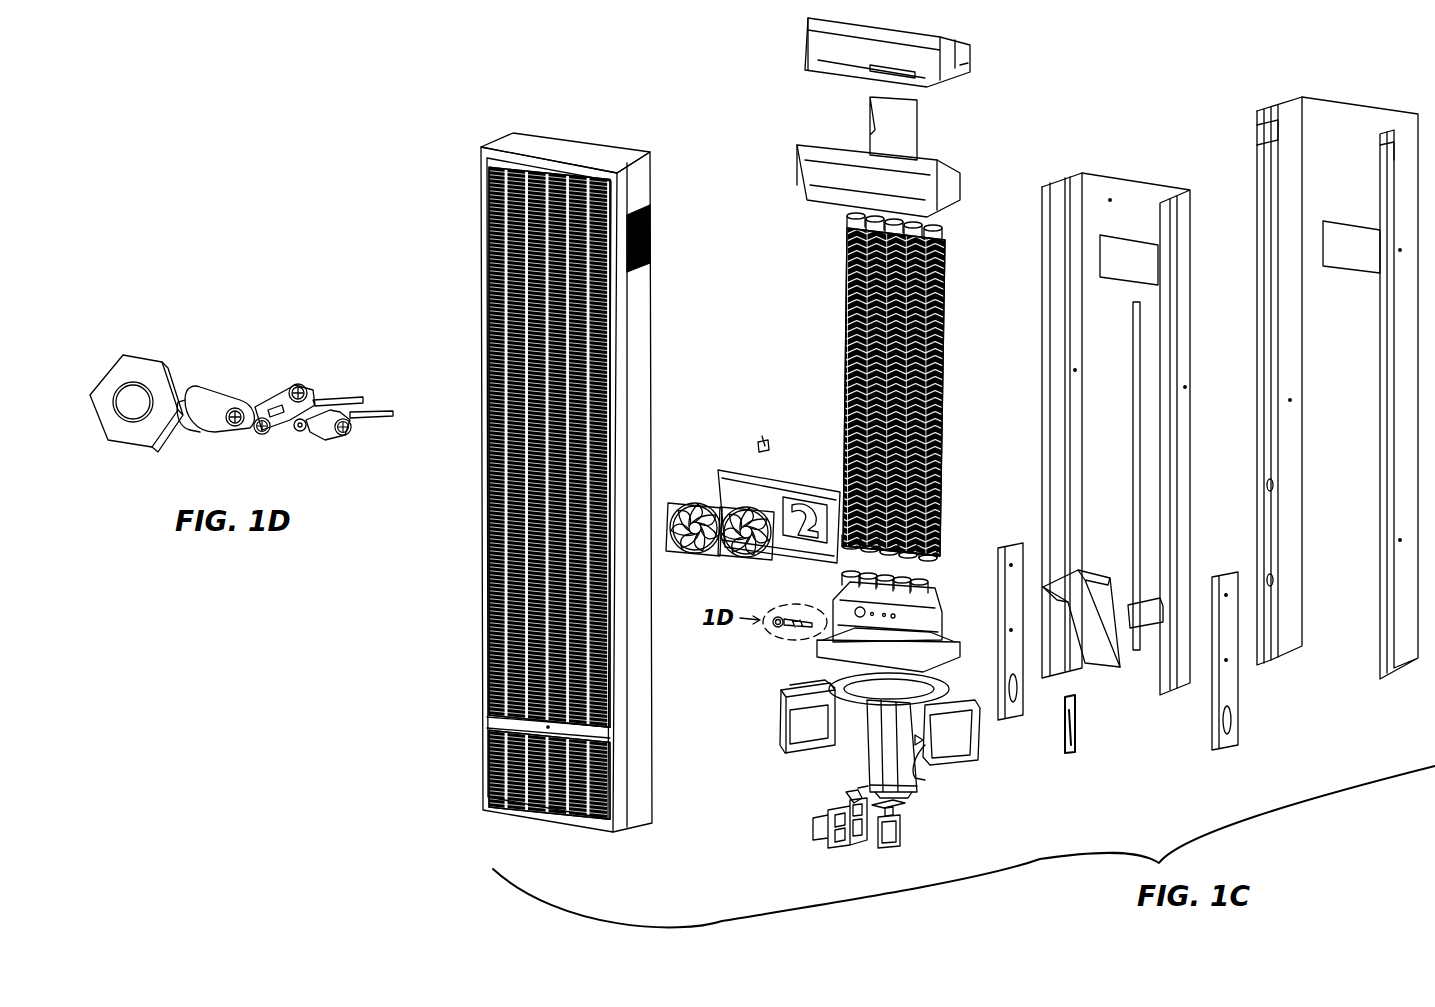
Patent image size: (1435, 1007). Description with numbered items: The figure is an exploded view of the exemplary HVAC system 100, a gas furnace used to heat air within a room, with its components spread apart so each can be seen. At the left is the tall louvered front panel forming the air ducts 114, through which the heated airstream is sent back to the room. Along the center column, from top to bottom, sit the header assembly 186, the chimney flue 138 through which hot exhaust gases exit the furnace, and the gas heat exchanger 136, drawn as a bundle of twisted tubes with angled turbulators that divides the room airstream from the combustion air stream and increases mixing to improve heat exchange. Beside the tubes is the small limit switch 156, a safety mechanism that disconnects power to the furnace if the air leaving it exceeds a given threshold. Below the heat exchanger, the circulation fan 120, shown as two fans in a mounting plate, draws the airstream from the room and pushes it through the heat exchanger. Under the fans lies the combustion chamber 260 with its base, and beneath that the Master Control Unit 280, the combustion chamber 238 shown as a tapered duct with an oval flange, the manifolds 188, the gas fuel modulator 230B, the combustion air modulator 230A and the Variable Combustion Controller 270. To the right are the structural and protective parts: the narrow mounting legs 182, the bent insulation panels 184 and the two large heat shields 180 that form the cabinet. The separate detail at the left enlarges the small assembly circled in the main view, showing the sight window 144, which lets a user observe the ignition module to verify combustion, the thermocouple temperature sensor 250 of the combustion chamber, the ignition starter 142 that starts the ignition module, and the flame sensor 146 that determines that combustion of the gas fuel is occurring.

In FIG. 1C, the HVAC system 100 is at (428, 97).
In FIG. 1C, the air ducts 114 is at (483, 273).
In FIG. 1C, the header assembly 186 is at (855, 36).
In FIG. 1C, the chimney flue 138 is at (820, 165).
In FIG. 1C, the gas heat exchanger 136 is at (870, 300).
In FIG. 1C, the limit switch 156 is at (762, 440).
In FIG. 1C, the circulation fan 120 is at (693, 508).
In FIG. 1C, the combustion chamber 260 is at (840, 590).
In FIG. 1C, the Master Control Unit 280 is at (790, 715).
In FIG. 1C, the combustion chamber 238 is at (878, 745).
In FIG. 1C, the manifolds 188 is at (855, 795).
In FIG. 1C, the gas fuel modulator 230B is at (845, 835).
In FIG. 1C, the combustion air modulator 230A is at (905, 835).
In FIG. 1C, the Variable Combustion Controller 270 is at (965, 745).
In FIG. 1C, the mounting legs 182 is at (1010, 555).
In FIG. 1C, the insulation panels 184 is at (1140, 640).
In FIG. 1C, the heat shields 180 is at (1183, 665).
In FIG. 1D, the sight window 144 is at (167, 368).
In FIG. 1D, the thermocouple temperature sensor 250 is at (237, 392).
In FIG. 1D, the ignition starter 142 is at (335, 398).
In FIG. 1D, the flame sensor 146 is at (363, 423).